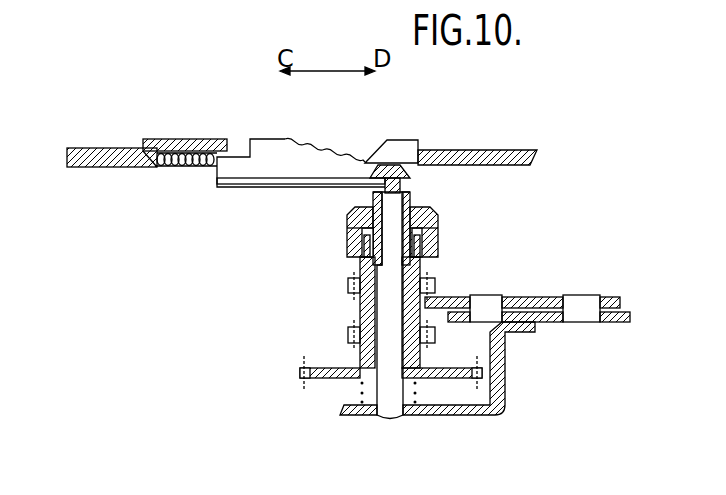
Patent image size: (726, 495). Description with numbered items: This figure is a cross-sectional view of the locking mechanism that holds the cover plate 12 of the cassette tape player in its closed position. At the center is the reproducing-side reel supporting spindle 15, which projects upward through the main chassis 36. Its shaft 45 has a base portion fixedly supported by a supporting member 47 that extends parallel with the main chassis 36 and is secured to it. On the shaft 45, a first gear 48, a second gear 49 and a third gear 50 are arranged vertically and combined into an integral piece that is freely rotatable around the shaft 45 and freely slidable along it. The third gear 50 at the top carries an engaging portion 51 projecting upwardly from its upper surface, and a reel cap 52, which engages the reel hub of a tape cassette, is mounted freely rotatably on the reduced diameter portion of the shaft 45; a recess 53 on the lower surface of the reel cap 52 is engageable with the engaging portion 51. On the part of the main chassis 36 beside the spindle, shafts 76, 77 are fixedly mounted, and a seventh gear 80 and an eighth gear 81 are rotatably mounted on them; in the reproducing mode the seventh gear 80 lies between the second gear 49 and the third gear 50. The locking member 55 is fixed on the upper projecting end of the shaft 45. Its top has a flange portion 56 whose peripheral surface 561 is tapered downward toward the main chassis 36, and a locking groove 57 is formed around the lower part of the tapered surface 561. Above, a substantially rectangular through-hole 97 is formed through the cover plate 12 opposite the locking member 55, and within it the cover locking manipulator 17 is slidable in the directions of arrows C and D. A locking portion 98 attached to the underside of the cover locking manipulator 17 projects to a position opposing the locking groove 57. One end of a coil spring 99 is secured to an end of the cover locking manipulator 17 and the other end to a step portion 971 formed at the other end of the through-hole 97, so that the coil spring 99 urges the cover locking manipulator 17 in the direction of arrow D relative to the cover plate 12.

The cover plate 12 is at (498, 149).
The reel supporting spindle 15 is at (472, 242).
The cover locking manipulator 17 is at (400, 139).
The main chassis 36 is at (620, 323).
The shaft 45 is at (390, 421).
The supporting member 47 is at (470, 415).
The first gear 48 is at (300, 372).
The second gear 49 is at (348, 335).
The third gear 50 is at (348, 287).
The engaging portion 51 is at (360, 263).
The reel cap 52 is at (440, 225).
The recess 53 is at (347, 240).
The locking member 55 is at (413, 197).
The flange portion 56 is at (405, 178).
The locking groove 57 is at (372, 196).
The shaft 76 is at (492, 295).
The shaft 77 is at (587, 295).
The seventh gear 80 is at (453, 295).
The eighth gear 81 is at (543, 295).
The through-hole 97 is at (237, 150).
The locking portion 98 is at (367, 182).
The coil spring 99 is at (188, 167).
The tapered peripheral surface 561 is at (367, 158).
The step portion 971 is at (188, 139).